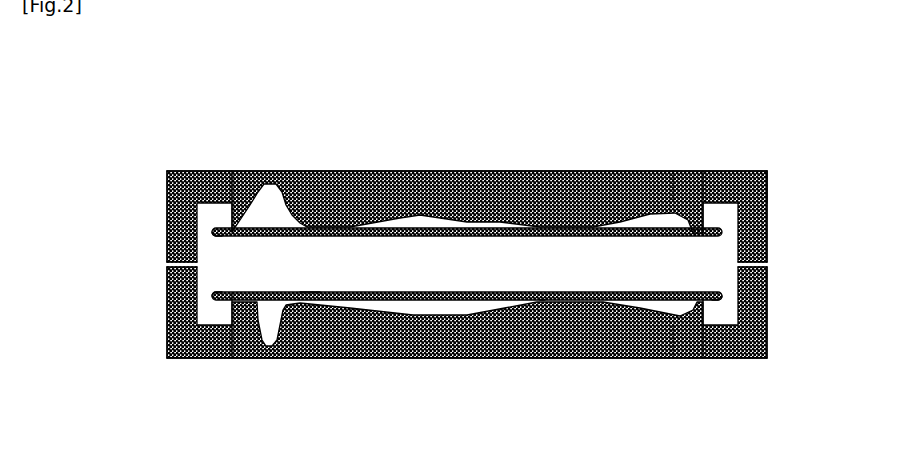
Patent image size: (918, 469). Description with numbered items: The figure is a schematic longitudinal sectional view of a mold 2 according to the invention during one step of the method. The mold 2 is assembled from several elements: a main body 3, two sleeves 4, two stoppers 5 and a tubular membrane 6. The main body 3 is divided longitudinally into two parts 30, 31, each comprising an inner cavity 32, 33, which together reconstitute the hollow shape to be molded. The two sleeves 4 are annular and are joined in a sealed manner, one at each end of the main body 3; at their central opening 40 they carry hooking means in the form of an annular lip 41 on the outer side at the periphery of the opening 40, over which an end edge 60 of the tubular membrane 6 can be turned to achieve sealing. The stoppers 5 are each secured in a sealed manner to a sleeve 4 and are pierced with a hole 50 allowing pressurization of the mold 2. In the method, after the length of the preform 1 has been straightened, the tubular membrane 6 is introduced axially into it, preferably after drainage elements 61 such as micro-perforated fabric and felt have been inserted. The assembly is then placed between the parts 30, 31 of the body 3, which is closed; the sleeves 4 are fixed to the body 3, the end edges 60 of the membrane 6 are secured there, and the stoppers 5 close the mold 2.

The preform 1 is at (546, 150).
The mold 2 is at (590, 161).
The main body 3 is at (447, 147).
The sleeve 4 is at (255, 183).
The stopper 5 is at (182, 232).
The tubular membrane 6 is at (303, 292).
The part of the main body 30 is at (340, 185).
The part of the main body 31 is at (420, 340).
The cavity 32 is at (470, 219).
The cavity 33 is at (447, 314).
The central opening 40 is at (710, 263).
The annular lip 41 is at (222, 232).
The hole 50 is at (172, 265).
The end edge 60 is at (220, 298).
The drainage elements 61 is at (540, 300).